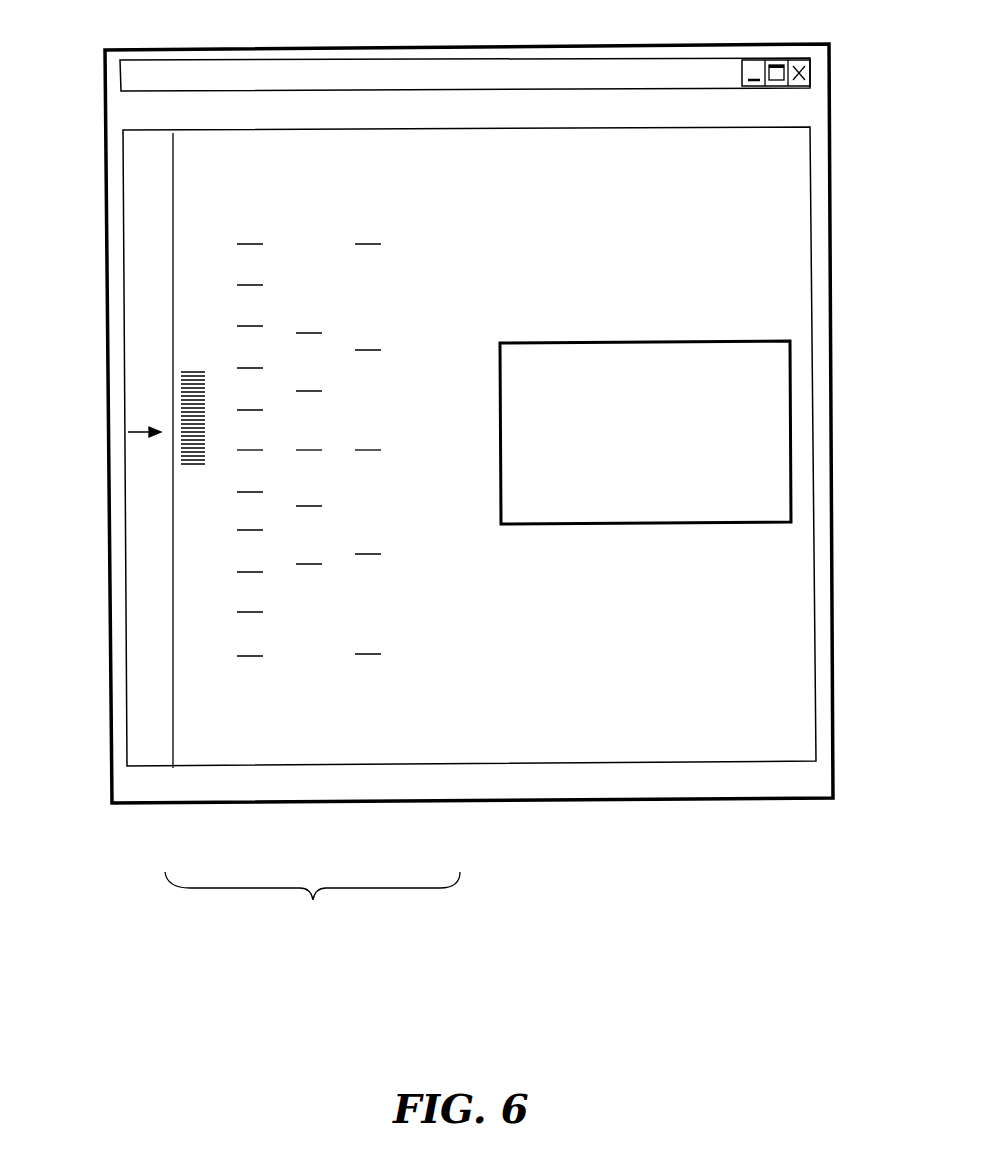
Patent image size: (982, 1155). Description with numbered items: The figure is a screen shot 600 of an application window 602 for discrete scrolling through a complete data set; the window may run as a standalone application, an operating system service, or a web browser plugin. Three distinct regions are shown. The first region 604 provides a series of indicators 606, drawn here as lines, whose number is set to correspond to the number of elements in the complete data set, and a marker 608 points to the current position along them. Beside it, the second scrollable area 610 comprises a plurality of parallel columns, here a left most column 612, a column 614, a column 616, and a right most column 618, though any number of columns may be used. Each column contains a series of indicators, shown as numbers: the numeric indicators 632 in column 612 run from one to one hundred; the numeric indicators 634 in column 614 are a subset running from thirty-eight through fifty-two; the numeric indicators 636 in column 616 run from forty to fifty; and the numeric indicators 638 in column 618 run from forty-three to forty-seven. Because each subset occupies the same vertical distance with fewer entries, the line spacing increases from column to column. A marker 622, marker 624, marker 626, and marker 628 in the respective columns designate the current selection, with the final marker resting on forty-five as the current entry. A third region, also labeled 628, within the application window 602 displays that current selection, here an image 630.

The screen shot 600 is at (585, 1081).
The application window 602 is at (818, 627).
The first region 604 is at (165, 152).
The indicators 606 is at (168, 243).
The marker 608 is at (118, 432).
The second scrollable area 610 is at (313, 905).
The left most column 612 is at (178, 128).
The column 614 is at (240, 135).
The column 616 is at (300, 135).
The right most column 618 is at (365, 215).
The marker 622 is at (182, 447).
The marker 624 is at (250, 448).
The marker 626 is at (305, 448).
The marker 628 is at (793, 480).
The image 630 is at (742, 418).
The numeric indicators 632 is at (183, 765).
The numeric indicators 634 is at (250, 762).
The numeric indicators 636 is at (308, 760).
The numeric indicators 638 is at (363, 760).